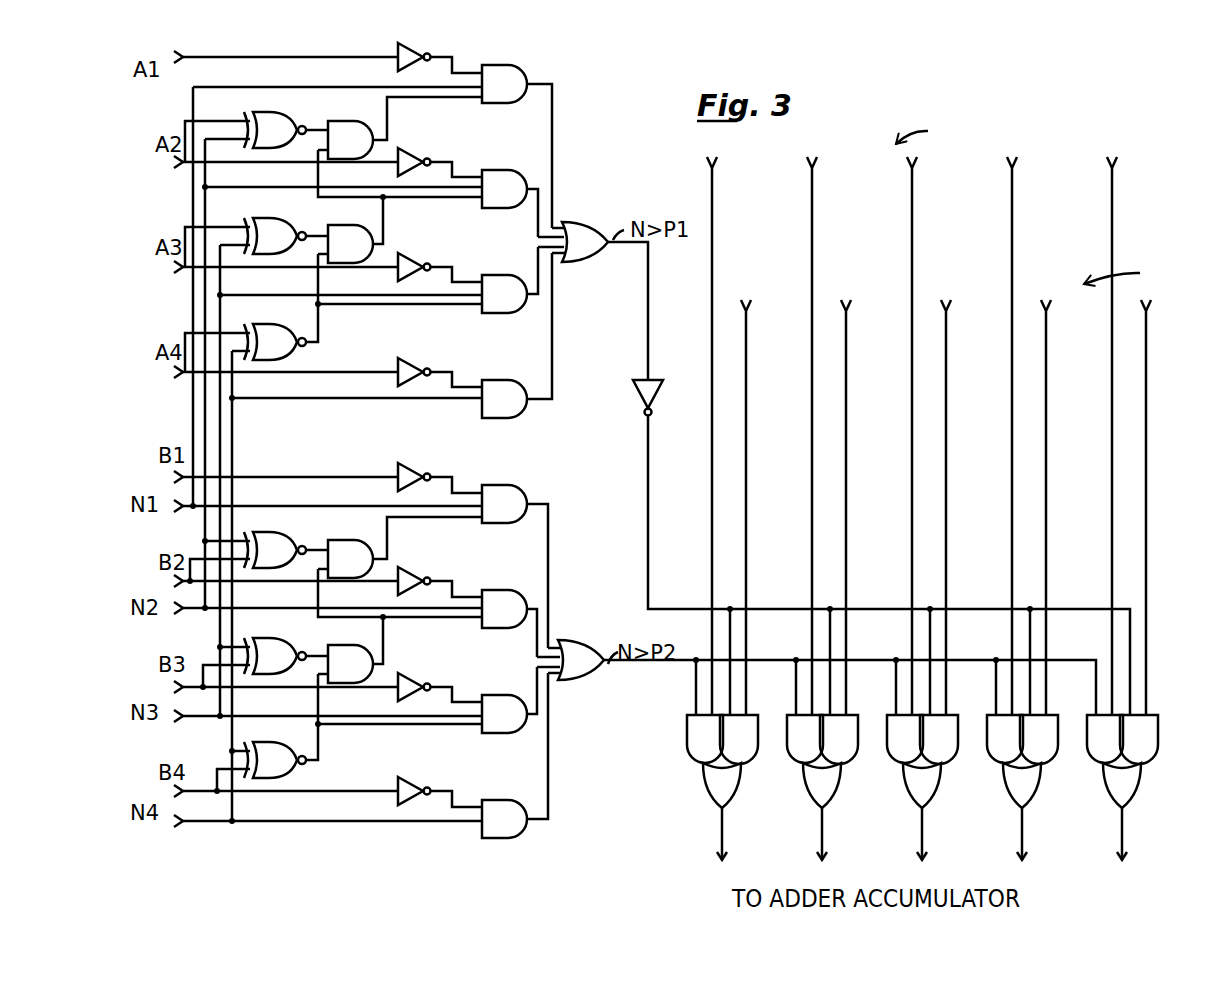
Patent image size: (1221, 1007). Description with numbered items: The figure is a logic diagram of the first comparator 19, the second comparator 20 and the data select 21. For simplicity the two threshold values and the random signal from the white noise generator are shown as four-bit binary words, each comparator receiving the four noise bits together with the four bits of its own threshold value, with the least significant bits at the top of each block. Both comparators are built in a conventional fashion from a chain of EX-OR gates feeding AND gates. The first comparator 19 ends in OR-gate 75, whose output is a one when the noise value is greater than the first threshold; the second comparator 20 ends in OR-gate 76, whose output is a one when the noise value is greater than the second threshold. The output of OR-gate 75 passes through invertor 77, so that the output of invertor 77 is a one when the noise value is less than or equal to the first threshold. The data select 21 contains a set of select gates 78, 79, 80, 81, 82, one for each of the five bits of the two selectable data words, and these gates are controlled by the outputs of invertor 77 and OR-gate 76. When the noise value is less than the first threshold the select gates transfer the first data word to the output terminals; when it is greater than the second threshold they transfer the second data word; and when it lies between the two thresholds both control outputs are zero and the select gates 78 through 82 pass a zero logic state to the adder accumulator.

The first comparator 19 is at (568, 86).
The second comparator 20 is at (566, 478).
The data select 21 is at (1143, 250).
The OR-gate 75 is at (565, 224).
The OR-gate 76 is at (567, 641).
The invertor 77 is at (662, 392).
The select gate 78 is at (1138, 798).
The select gate 79 is at (1038, 798).
The select gate 80 is at (938, 798).
The select gate 81 is at (838, 798).
The select gate 82 is at (738, 798).